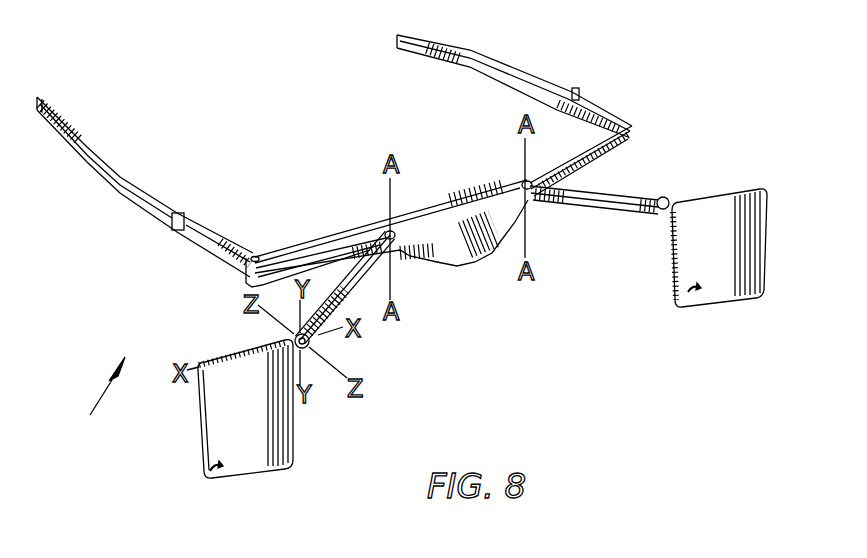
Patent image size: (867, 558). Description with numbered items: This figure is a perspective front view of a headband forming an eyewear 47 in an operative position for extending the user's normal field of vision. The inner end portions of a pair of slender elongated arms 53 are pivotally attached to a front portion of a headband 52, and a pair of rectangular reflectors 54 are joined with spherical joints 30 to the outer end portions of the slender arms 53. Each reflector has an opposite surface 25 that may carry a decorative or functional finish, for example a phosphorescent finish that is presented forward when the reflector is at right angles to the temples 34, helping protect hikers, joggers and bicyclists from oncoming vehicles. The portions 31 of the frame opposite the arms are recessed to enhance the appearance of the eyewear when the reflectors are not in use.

The opposite surface 25 is at (420, 402).
The spherical joint 30 is at (518, 286).
The portions opposite the arms 31 is at (416, 225).
The temple 34 is at (334, 143).
The eyewear 47 is at (94, 405).
The headband 52 is at (391, 204).
The slender elongated arm 53 is at (465, 262).
The rectangular reflector 54 is at (498, 361).